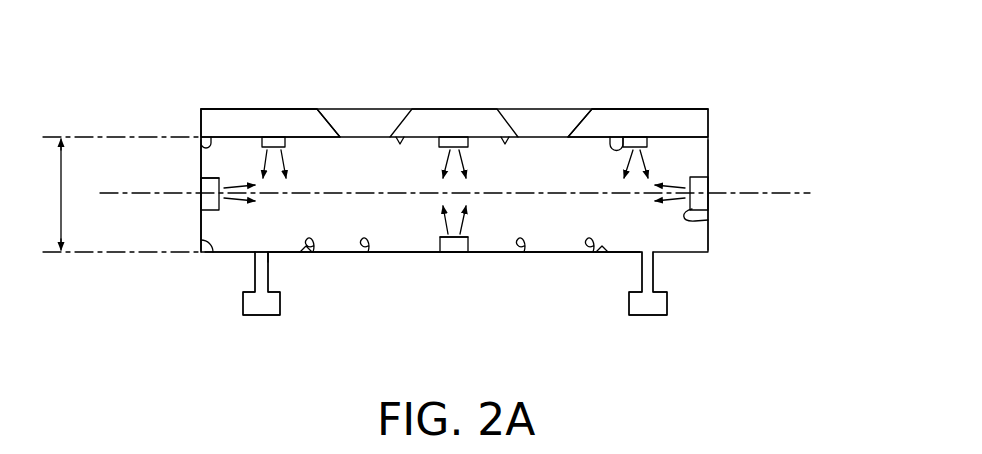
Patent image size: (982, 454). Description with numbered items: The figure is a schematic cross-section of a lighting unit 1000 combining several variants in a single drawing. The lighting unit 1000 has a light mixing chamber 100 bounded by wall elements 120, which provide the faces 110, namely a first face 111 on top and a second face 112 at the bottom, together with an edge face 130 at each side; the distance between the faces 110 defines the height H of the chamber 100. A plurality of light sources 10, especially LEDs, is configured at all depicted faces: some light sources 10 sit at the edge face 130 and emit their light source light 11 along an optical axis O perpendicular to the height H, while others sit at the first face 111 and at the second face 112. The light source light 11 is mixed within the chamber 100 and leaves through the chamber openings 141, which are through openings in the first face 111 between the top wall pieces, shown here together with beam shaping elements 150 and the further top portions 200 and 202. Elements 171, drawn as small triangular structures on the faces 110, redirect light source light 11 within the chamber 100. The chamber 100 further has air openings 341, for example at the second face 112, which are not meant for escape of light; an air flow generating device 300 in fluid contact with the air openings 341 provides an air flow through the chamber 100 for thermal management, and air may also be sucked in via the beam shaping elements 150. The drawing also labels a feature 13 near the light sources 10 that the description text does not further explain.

The light source 10 is at (273, 140).
The light source light 11 is at (242, 204).
The mounting portion 13 is at (228, 182).
The light mixing chamber 100 is at (690, 240).
The face 110 is at (626, 180).
The first face 111 is at (203, 140).
The second face 112 is at (369, 252).
The wall element 120 is at (345, 95).
The edge face 130 is at (210, 255).
The chamber opening 141 is at (366, 125).
The beam shaping element 150 is at (556, 127).
The redirecting element 171 is at (398, 142).
The top plate 200 is at (288, 83).
The middle cover piece 202 is at (515, 105).
The air flow generating device 300 is at (235, 308).
The air opening 341 is at (263, 255).
The lighting unit 1000 is at (750, 75).
The optical axis O is at (790, 193).
The height H is at (118, 194).